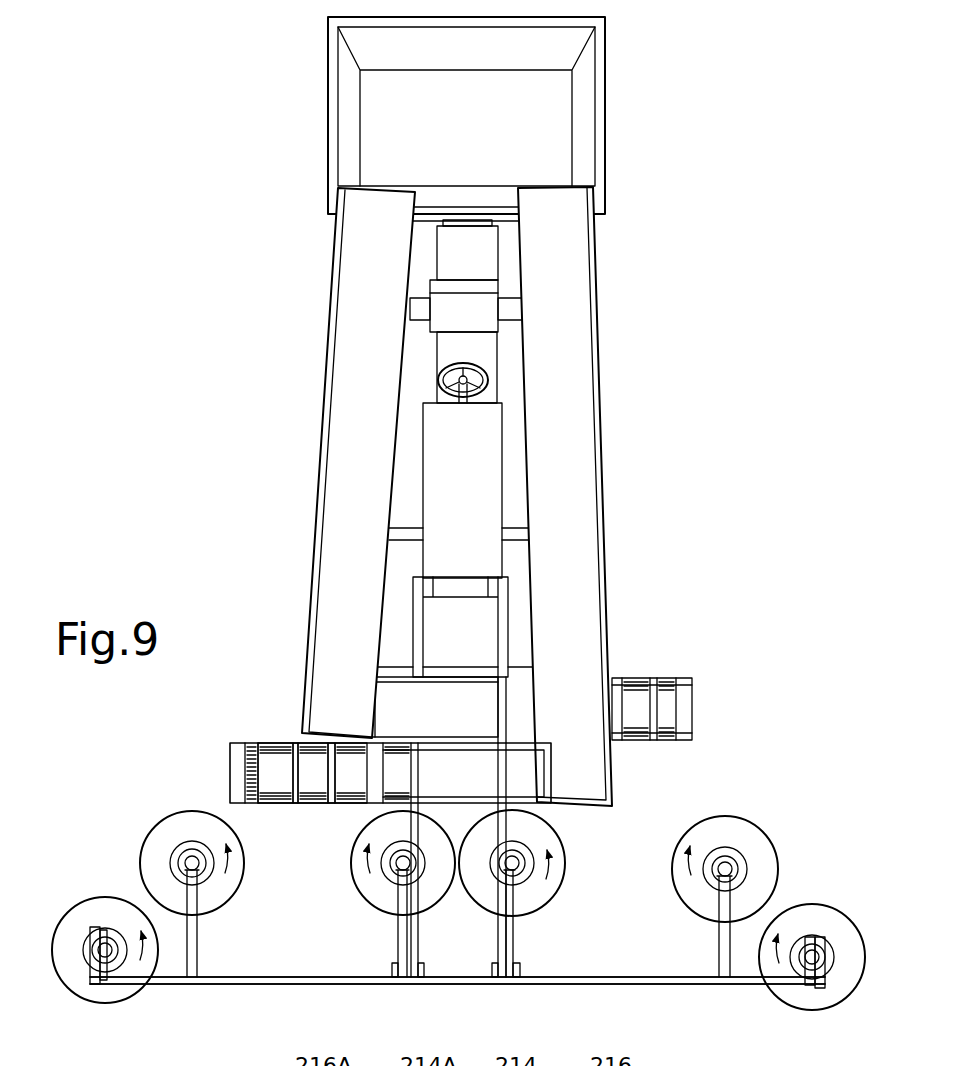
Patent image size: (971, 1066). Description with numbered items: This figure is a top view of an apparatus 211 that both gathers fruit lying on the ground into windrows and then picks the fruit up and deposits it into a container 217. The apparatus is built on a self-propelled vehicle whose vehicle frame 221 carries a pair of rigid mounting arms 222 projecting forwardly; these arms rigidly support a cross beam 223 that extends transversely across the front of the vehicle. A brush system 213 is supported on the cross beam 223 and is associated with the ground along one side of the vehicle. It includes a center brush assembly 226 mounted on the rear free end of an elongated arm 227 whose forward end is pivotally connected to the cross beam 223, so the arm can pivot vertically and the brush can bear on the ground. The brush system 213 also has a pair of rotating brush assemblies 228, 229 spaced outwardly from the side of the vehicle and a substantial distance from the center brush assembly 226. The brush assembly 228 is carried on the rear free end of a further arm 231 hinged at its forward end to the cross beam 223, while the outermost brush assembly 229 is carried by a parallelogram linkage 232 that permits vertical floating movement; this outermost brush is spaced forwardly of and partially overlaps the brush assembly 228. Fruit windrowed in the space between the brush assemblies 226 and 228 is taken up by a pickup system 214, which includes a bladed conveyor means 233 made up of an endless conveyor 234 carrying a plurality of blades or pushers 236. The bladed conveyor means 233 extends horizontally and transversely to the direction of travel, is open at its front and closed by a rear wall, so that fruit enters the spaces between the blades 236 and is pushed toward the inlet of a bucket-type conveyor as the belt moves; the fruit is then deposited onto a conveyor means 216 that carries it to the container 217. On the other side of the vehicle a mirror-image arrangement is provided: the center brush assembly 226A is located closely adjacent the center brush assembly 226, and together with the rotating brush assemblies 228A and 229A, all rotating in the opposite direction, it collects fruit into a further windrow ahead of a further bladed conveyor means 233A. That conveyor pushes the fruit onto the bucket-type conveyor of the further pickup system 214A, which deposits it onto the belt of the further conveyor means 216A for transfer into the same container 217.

The apparatus 211 is at (211, 326).
The brush system 213 is at (193, 989).
The pickup system 214 is at (327, 803).
The further pickup system 214A is at (661, 676).
The conveyor means 216 is at (603, 478).
The further conveyor means 216A is at (317, 466).
The container 217 is at (540, 117).
The vehicle frame 221 is at (470, 580).
The rigid mounting arms 222 is at (497, 928).
The cross beam 223 is at (560, 977).
The center brush assembly 226 is at (368, 885).
The center brush assembly 226A is at (545, 830).
The elongated arm 227 is at (398, 933).
The rotating brush assembly 228 is at (165, 830).
The rotating brush assembly 228A is at (748, 838).
The outermost brush assembly 229 is at (72, 920).
The outermost brush assembly 229A is at (835, 920).
The arm 231 is at (198, 931).
The parallelogram linkage 232 is at (95, 955).
The bladed conveyor means 233 is at (227, 739).
The further bladed conveyor means 233A is at (668, 742).
The endless conveyor 234 is at (275, 781).
The blades or pushers 236 is at (293, 760).